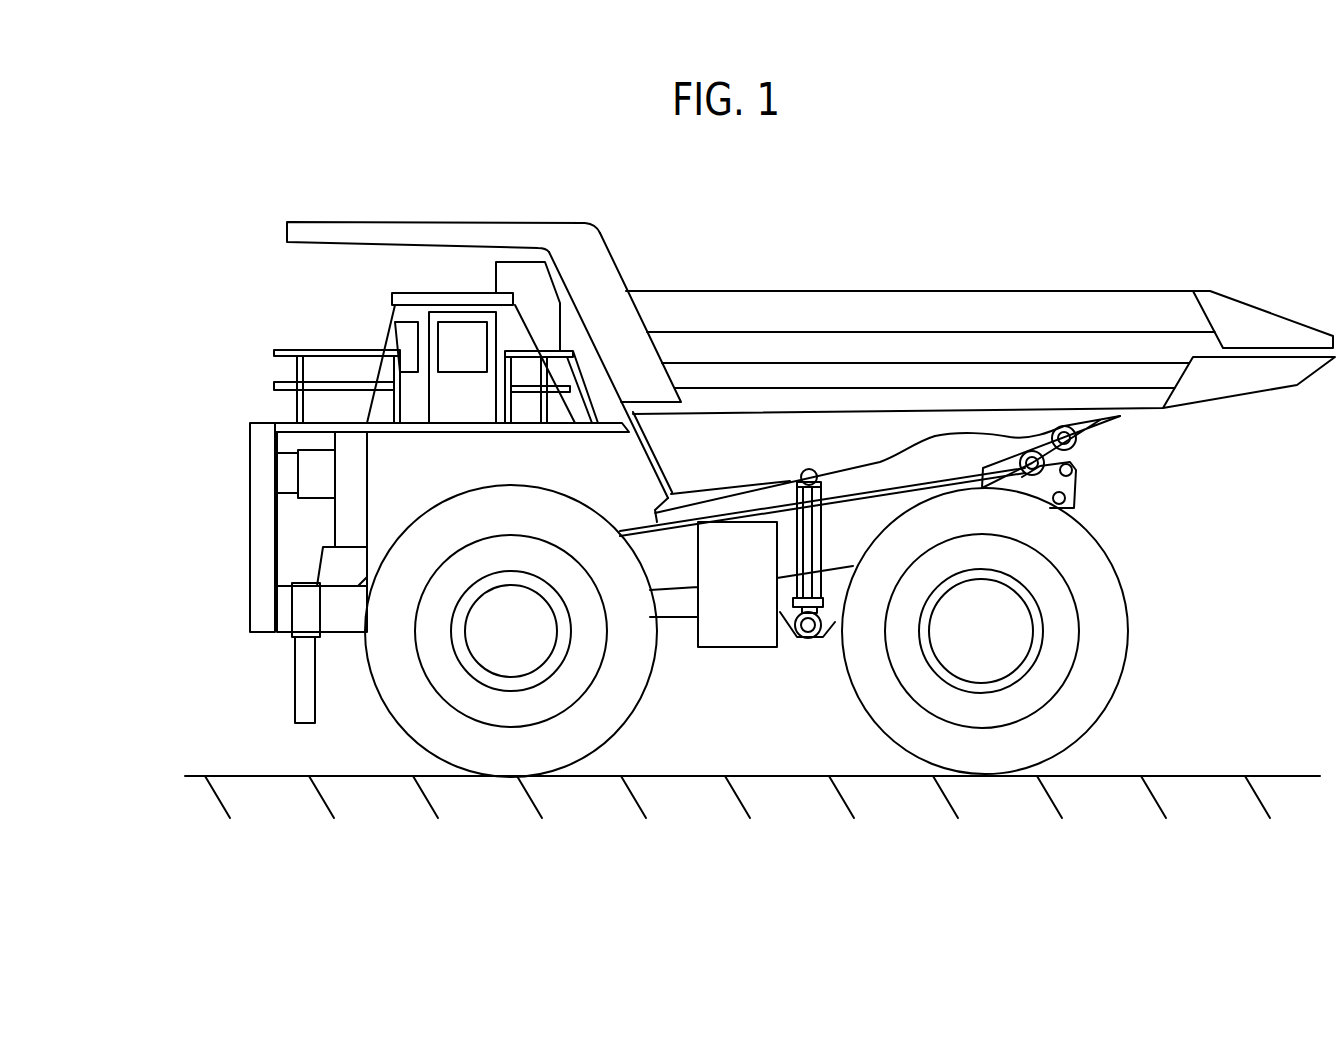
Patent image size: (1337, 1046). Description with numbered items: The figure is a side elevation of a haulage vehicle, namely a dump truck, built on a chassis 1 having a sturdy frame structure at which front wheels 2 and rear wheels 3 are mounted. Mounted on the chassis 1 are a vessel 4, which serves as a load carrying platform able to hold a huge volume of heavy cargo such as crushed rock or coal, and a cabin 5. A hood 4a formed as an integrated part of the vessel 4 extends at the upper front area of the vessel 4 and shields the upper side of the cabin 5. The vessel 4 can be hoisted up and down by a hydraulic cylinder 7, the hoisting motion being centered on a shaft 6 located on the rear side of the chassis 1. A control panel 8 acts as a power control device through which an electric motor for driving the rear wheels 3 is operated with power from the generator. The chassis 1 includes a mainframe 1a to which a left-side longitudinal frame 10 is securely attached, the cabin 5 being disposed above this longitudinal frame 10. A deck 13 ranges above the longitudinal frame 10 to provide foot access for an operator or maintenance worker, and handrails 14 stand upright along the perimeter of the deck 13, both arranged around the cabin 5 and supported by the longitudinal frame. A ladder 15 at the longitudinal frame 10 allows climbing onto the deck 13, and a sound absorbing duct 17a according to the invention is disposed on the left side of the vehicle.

The chassis 1 is at (675, 606).
The mainframe 1a is at (332, 627).
The front wheels 2 is at (623, 688).
The rear wheels 3 is at (1095, 660).
The vessel 4 is at (922, 307).
The hood 4a is at (468, 237).
The cabin 5 is at (415, 293).
The shaft 6 is at (1053, 462).
The hydraulic cylinder 7 is at (793, 518).
The control panel 8 is at (535, 283).
The longitudinal frame 10 is at (302, 550).
The deck 13 is at (283, 422).
The handrails 14 is at (297, 348).
The ladder 15 is at (300, 668).
The sound absorbing duct 17a is at (255, 535).